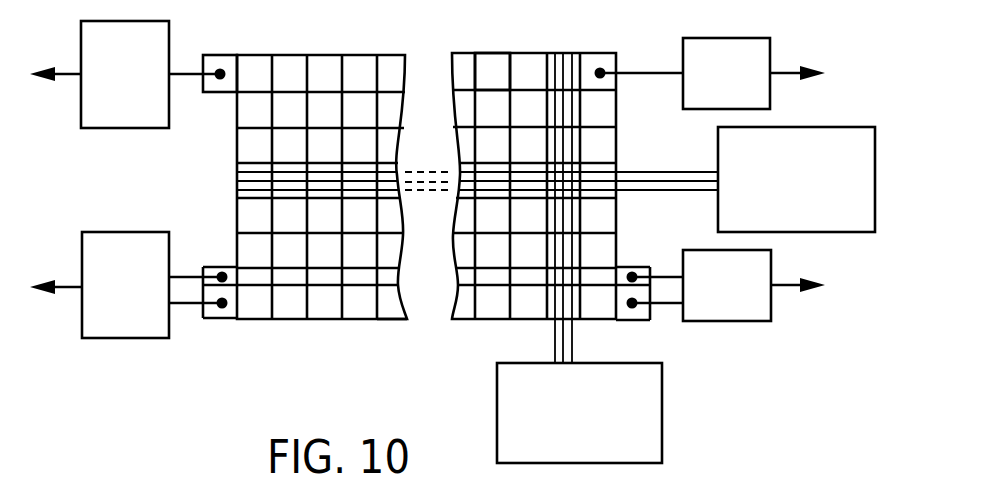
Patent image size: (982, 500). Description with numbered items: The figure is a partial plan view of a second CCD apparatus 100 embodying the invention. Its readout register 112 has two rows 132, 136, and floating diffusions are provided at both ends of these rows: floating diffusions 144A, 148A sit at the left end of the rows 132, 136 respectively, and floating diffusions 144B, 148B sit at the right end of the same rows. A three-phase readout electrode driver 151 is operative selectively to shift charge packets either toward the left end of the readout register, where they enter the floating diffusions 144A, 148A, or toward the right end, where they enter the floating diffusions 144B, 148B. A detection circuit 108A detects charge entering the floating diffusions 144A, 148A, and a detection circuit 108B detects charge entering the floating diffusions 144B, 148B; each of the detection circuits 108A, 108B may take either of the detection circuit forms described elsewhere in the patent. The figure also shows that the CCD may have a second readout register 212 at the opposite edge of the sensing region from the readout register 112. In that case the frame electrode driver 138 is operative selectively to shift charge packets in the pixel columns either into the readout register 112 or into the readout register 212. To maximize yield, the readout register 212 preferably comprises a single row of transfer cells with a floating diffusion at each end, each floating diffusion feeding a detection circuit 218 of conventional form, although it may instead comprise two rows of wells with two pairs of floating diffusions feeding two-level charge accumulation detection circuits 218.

The CCD apparatus 100 is at (300, 40).
The second readout register 212 is at (497, 72).
The detection circuit 218 is at (146, 84).
The frame electrode driver 138 is at (860, 135).
The detection circuit 108A is at (154, 297).
The detection circuit 108B is at (755, 295).
The floating diffusion 144A is at (238, 272).
The floating diffusion 148A is at (220, 312).
The floating diffusion 144B is at (617, 272).
The floating diffusion 148B is at (632, 315).
The row 132 is at (452, 279).
The row 136 is at (452, 304).
The readout register 112 is at (395, 312).
The three-phase readout electrode driver 151 is at (662, 400).